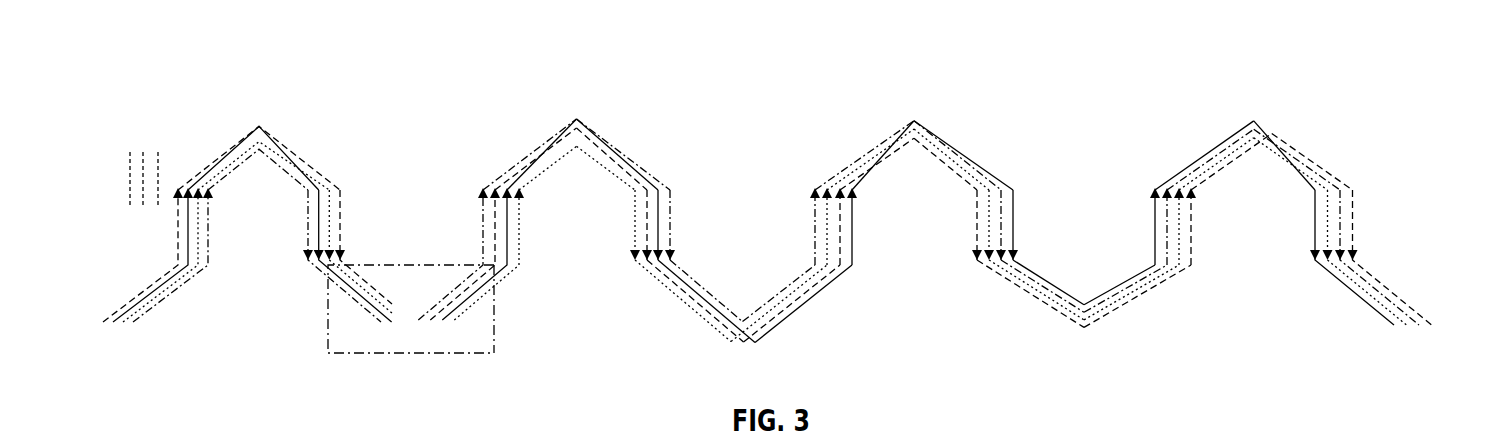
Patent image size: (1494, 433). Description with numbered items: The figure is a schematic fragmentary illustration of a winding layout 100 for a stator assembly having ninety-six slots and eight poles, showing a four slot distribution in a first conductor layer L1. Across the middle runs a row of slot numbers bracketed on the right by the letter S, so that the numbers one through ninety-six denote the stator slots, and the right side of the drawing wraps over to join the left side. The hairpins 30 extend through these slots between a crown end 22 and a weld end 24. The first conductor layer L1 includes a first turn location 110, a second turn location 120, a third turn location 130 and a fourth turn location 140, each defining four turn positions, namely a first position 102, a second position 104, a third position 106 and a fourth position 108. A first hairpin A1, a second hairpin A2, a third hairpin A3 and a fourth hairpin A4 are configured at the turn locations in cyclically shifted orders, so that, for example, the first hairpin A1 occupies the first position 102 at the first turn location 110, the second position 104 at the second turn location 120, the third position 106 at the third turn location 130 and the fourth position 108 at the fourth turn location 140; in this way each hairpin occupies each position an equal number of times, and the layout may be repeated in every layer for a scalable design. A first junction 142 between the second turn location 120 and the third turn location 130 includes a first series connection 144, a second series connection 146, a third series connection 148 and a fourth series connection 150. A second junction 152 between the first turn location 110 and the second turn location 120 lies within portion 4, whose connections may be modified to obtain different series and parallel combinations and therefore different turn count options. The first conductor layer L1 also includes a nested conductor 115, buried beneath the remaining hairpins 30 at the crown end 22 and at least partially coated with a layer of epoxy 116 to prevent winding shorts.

The slot number bracket S is at (797, 184).
The first conductor layer L1 is at (100, 178).
The winding layout 100 is at (149, 142).
The first turn location 110 is at (259, 124).
The second turn location 120 is at (574, 107).
The third turn location 130 is at (913, 118).
The fourth turn location 140 is at (1247, 120).
The first position 102 is at (504, 169).
The second position 104 is at (513, 167).
The third position 106 is at (553, 140).
The fourth position 108 is at (560, 140).
The hairpins 30 is at (973, 137).
The crown end 22 is at (1310, 138).
The weld end 24 is at (1150, 313).
The nested conductor 115 is at (1030, 263).
The layer of epoxy 116 is at (1050, 287).
The first junction 142 is at (803, 310).
The first series connection 144 is at (673, 270).
The second series connection 146 is at (703, 300).
The third series connection 148 is at (705, 313).
The fourth series connection 150 is at (727, 337).
The second junction 152 is at (347, 327).
The portion 4 is at (494, 317).
The first hairpin A1 is at (1228, 259).
The second hairpin A2 is at (1155, 222).
The third hairpin A3 is at (198, 225).
The fourth hairpin A4 is at (208, 242).